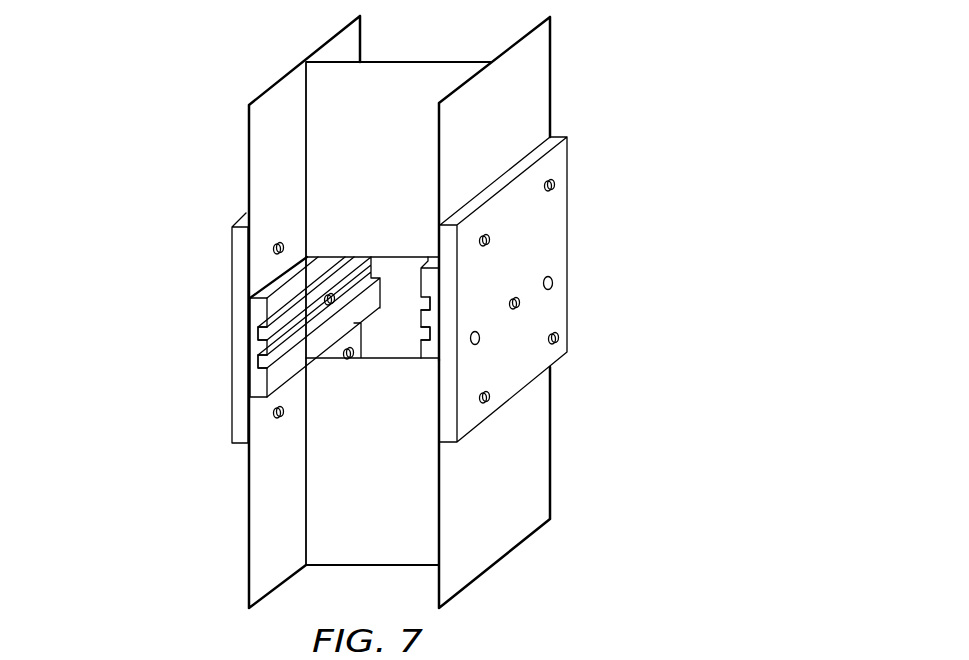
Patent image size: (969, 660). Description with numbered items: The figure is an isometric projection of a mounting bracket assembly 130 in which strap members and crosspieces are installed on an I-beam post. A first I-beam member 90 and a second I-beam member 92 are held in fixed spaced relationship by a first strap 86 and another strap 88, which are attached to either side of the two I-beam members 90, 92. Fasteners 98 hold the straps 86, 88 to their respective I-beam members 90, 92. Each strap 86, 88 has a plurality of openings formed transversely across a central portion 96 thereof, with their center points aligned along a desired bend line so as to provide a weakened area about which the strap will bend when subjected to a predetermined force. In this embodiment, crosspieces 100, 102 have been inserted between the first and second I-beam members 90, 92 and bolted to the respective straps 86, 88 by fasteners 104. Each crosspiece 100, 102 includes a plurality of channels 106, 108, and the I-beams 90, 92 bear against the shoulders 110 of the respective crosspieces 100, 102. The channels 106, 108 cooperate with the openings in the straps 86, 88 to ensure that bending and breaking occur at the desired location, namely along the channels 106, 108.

The mounting bracket assembly 130 is at (110, 283).
The first I-beam member 90 is at (561, 70).
The second I-beam member 92 is at (563, 442).
The strap 88 is at (225, 258).
The first strap 86 is at (566, 238).
The central portion 96 is at (566, 287).
The fasteners 98 is at (556, 187).
The crosspiece 100 is at (241, 346).
The crosspiece 102 is at (441, 313).
The fasteners 104 is at (334, 292).
The channel 106 is at (242, 329).
The channel 108 is at (246, 365).
The shoulders 110 is at (254, 398).